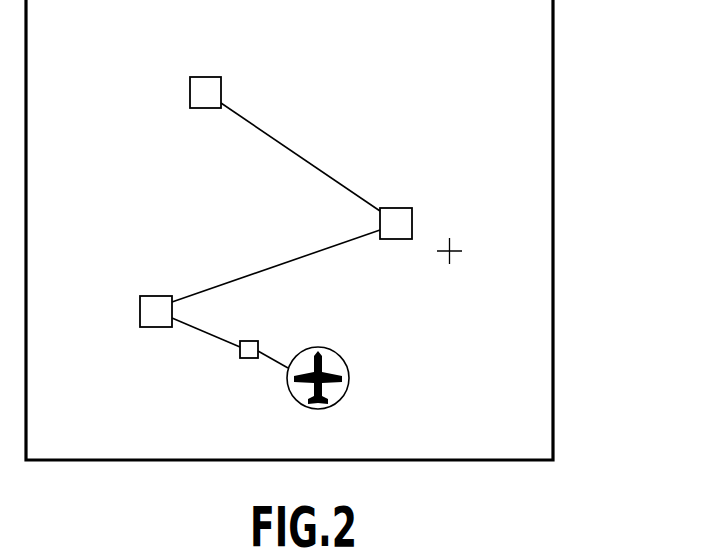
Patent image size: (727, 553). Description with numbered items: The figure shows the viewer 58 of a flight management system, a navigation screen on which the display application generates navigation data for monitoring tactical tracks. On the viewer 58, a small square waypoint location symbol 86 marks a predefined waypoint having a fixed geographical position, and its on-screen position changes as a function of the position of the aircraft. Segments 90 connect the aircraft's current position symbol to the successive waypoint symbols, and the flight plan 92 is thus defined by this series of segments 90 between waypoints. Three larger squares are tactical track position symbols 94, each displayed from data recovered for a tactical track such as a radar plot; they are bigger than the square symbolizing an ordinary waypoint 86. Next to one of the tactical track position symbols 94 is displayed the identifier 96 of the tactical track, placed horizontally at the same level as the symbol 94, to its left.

The viewer 58 is at (561, 210).
The waypoint location symbol 86 is at (238, 354).
The segment 90 is at (302, 155).
The flight plan 92 is at (271, 232).
The tactical track position symbol 94 is at (247, 220).
The identifier of the tactical track 96 is at (98, 345).